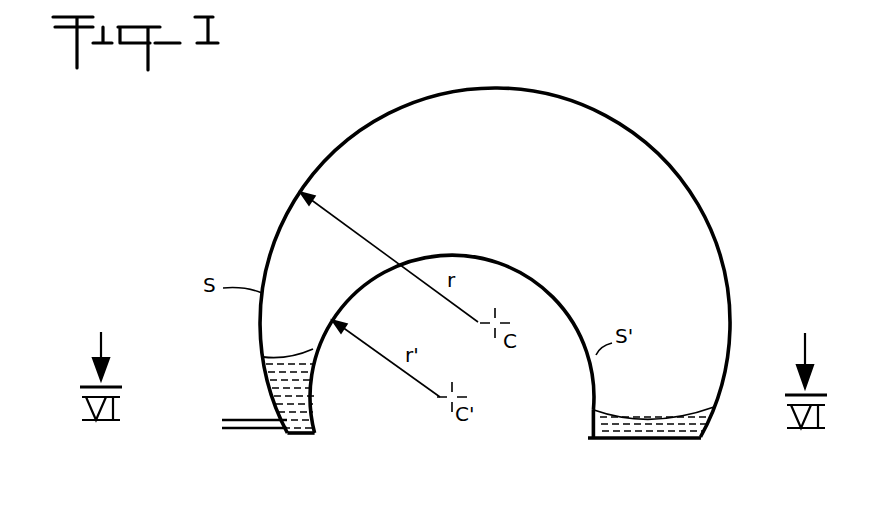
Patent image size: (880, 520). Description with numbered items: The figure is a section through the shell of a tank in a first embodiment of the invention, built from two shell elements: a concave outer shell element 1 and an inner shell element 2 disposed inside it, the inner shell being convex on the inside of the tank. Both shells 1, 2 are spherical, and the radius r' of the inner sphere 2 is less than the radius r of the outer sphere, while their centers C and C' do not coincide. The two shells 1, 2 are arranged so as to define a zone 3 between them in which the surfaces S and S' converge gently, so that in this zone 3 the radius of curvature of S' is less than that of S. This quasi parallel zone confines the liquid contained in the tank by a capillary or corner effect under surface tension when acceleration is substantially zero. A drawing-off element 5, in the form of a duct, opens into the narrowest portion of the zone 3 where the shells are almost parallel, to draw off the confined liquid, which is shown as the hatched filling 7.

The outer shell element 1 is at (670, 162).
The inner shell element 2 is at (592, 387).
The zone 3 is at (290, 405).
The drawing-off element 5 is at (240, 430).
The filling material 7 is at (270, 370).